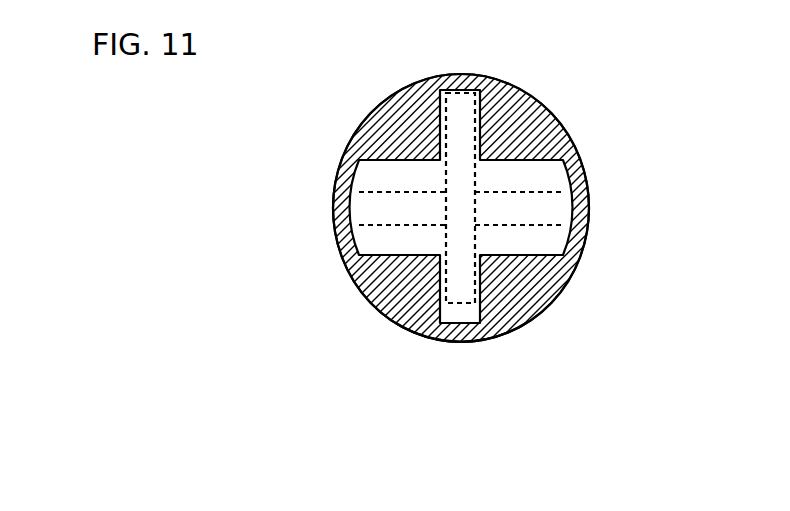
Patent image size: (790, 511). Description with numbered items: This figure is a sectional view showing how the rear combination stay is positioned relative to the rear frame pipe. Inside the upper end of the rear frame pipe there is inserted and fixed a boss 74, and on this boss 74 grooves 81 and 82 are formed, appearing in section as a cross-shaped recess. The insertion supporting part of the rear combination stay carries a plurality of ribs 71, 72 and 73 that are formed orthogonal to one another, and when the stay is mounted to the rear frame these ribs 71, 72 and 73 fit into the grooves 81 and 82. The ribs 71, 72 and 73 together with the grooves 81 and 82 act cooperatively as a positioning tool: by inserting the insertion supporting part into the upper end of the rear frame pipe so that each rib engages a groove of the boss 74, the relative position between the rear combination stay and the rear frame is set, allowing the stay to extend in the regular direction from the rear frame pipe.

The rib 71 is at (412, 100).
The groove 81 is at (483, 122).
The rib 72 is at (538, 170).
The groove 82 is at (590, 203).
The rib 73 is at (528, 240).
The boss 74 is at (382, 314).